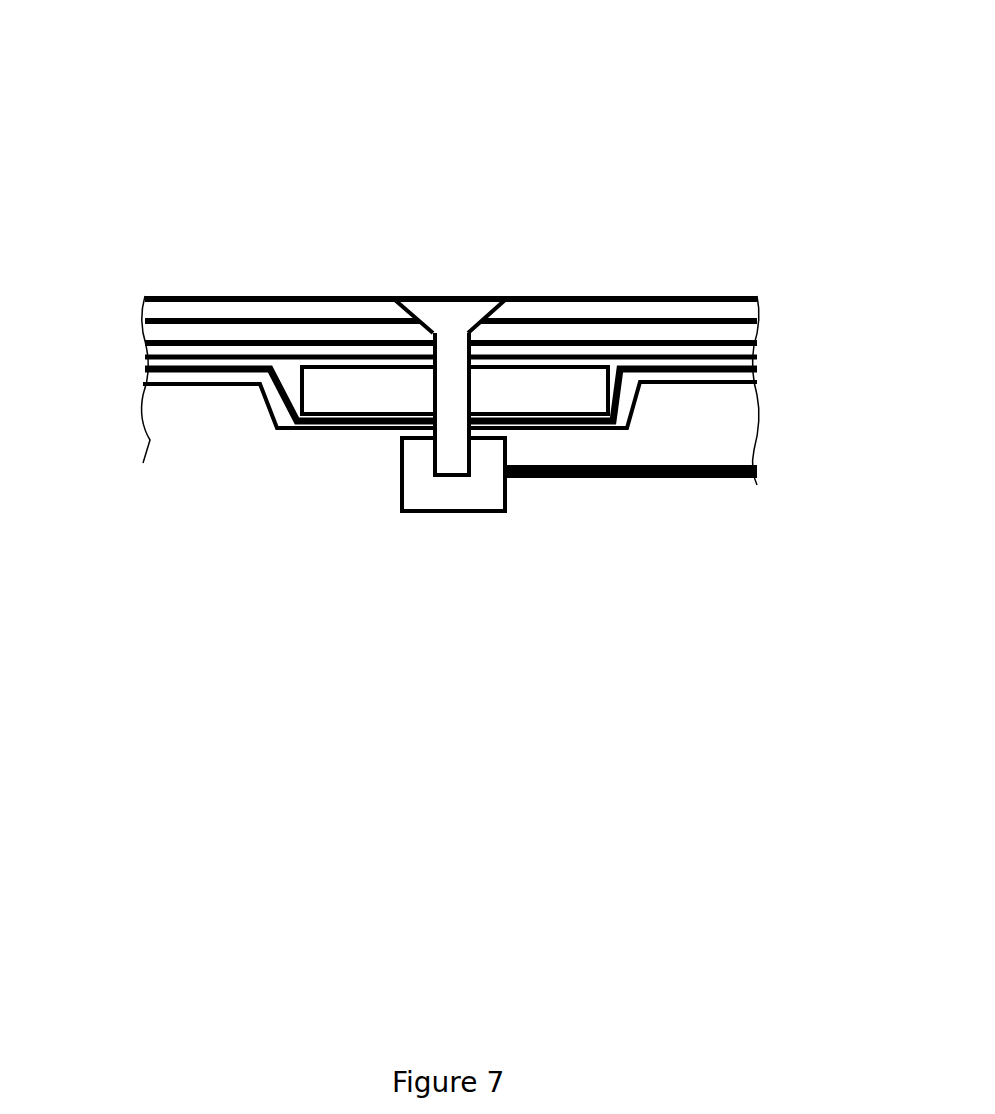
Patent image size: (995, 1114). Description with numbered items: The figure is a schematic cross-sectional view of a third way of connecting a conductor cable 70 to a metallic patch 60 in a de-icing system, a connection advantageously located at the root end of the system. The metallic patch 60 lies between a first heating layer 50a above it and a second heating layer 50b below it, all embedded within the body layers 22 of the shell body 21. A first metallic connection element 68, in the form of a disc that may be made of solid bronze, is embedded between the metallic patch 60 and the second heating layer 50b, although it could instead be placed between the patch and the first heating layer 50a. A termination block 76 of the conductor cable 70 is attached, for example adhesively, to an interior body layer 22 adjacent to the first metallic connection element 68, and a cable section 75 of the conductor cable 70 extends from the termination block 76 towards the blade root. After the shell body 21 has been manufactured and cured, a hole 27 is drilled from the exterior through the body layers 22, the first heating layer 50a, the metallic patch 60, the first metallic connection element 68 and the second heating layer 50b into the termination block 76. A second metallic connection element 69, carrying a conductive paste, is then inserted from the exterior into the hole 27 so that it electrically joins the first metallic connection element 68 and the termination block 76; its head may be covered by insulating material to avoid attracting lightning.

The shell body 21 is at (358, 240).
The body layers 22 is at (600, 322).
The hole 27 is at (428, 338).
The first heating layer 50a is at (753, 318).
The second heating layer 50b is at (207, 370).
The metallic patch 60 is at (188, 348).
The first metallic connection element 68 is at (333, 365).
The second metallic connection element 69 is at (467, 297).
The conductor cable 70 is at (535, 527).
The cable section 75 is at (667, 478).
The termination block 76 is at (445, 517).